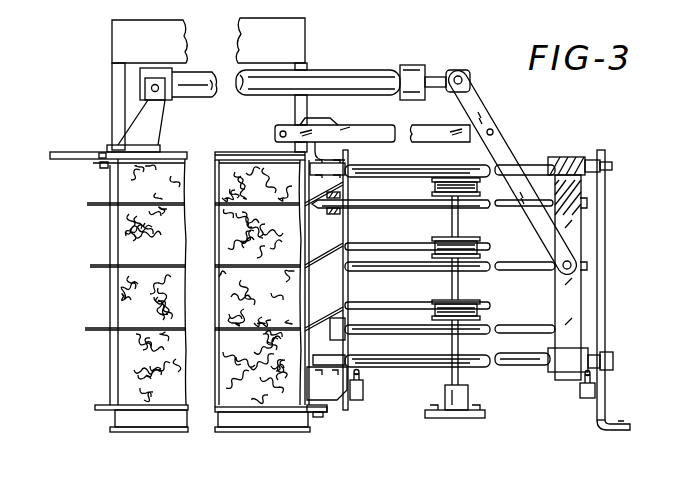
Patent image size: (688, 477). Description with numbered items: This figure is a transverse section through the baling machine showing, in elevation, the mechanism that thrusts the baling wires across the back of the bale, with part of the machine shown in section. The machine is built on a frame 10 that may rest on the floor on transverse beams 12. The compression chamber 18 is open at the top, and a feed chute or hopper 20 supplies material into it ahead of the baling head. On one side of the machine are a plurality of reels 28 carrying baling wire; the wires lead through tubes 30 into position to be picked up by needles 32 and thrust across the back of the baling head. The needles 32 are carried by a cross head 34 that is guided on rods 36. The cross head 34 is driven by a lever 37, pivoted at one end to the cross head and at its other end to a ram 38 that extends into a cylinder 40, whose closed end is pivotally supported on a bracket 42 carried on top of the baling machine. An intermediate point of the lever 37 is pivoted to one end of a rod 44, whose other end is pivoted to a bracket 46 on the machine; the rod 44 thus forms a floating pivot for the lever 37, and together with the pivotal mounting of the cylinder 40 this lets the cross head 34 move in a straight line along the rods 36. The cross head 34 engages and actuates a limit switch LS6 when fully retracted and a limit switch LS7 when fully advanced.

The frame 10 is at (327, 426).
The transverse beams 12 is at (271, 308).
The compression chamber 18 is at (268, 241).
The feed chute or hopper 20 is at (241, 46).
The reels 28 is at (439, 193).
The tubes 30 is at (318, 255).
The needles 32 is at (361, 208).
The cross head 34 is at (572, 298).
The rods 36 is at (530, 158).
The lever 37 is at (499, 144).
The ram 38 is at (440, 72).
The cylinder 40 is at (318, 80).
The bracket 42 is at (137, 127).
The rod 44 is at (362, 133).
The bracket 46 is at (275, 138).
The limit switch LS6 is at (584, 400).
The limit switch LS7 is at (361, 398).